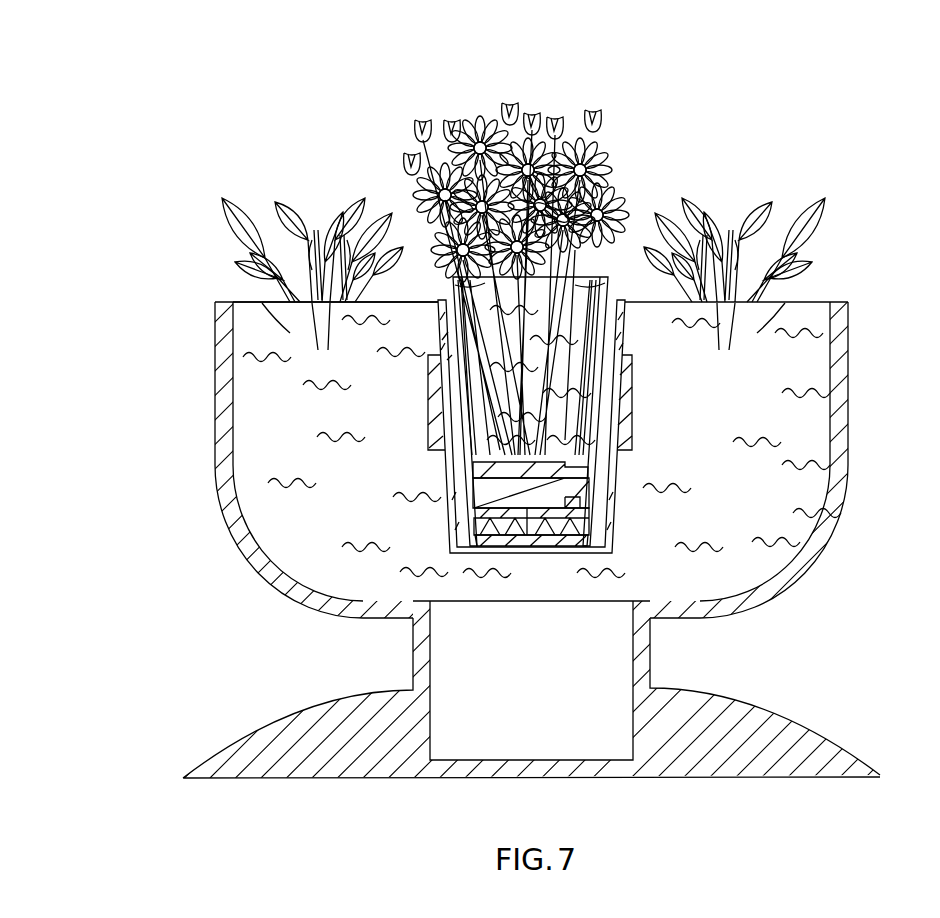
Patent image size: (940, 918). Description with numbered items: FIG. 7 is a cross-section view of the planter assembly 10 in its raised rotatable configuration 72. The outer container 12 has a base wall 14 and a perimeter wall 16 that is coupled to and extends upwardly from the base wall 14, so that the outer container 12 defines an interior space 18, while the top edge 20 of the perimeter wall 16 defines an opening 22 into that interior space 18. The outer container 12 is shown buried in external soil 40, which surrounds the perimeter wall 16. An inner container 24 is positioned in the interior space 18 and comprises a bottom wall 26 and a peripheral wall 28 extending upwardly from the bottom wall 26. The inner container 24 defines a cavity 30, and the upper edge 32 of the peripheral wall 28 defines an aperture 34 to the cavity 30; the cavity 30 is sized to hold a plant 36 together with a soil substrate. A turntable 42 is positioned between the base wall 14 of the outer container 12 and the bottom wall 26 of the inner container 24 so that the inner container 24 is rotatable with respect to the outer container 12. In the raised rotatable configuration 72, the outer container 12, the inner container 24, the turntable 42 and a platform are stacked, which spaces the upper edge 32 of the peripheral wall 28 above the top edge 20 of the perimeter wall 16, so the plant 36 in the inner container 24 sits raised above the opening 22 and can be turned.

The planter assembly 10 is at (676, 113).
The outer container 12 is at (663, 458).
The base wall 14 is at (531, 553).
The perimeter wall 16 is at (626, 352).
The interior space 18 is at (624, 327).
The top edge 20 is at (638, 296).
The opening 22 is at (624, 290).
The inner container 24 is at (430, 283).
The bottom wall 26 is at (497, 463).
The peripheral wall 28 is at (468, 380).
The cavity 30 is at (470, 425).
The upper edge 32 is at (438, 277).
The aperture 34 is at (553, 133).
The plant 36 is at (460, 120).
The external soil 40 is at (797, 516).
The turntable 42 is at (470, 528).
The raised rotatable configuration 72 is at (427, 572).